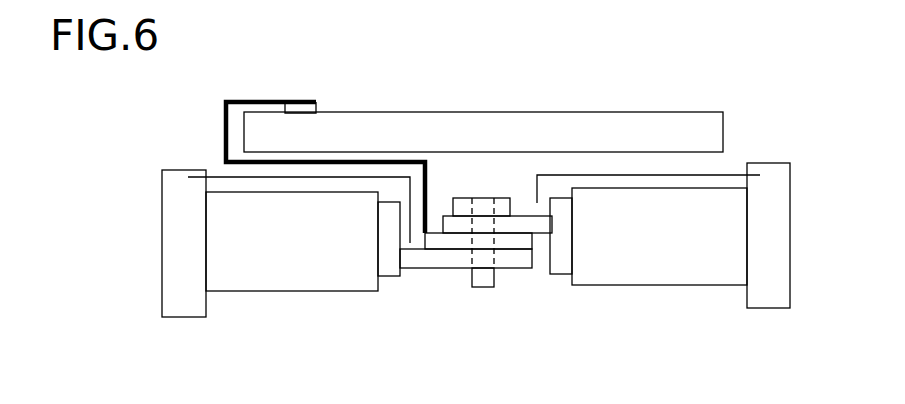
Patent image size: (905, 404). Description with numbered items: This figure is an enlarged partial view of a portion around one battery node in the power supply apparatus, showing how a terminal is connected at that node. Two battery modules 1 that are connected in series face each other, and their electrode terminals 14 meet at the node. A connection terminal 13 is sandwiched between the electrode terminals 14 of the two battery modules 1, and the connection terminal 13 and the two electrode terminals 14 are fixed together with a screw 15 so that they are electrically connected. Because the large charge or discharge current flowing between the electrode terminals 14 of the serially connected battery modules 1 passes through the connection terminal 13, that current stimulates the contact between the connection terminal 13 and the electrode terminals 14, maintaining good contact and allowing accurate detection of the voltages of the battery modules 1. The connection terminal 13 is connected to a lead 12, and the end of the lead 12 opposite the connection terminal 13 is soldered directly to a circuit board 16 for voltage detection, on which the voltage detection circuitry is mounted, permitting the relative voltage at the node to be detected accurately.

The battery module 1 is at (280, 291).
The lead 12 is at (225, 123).
The connection terminal 13 is at (502, 240).
The electrode terminal 14 is at (452, 216).
The screw 15 is at (495, 190).
The circuit board 16 is at (427, 112).